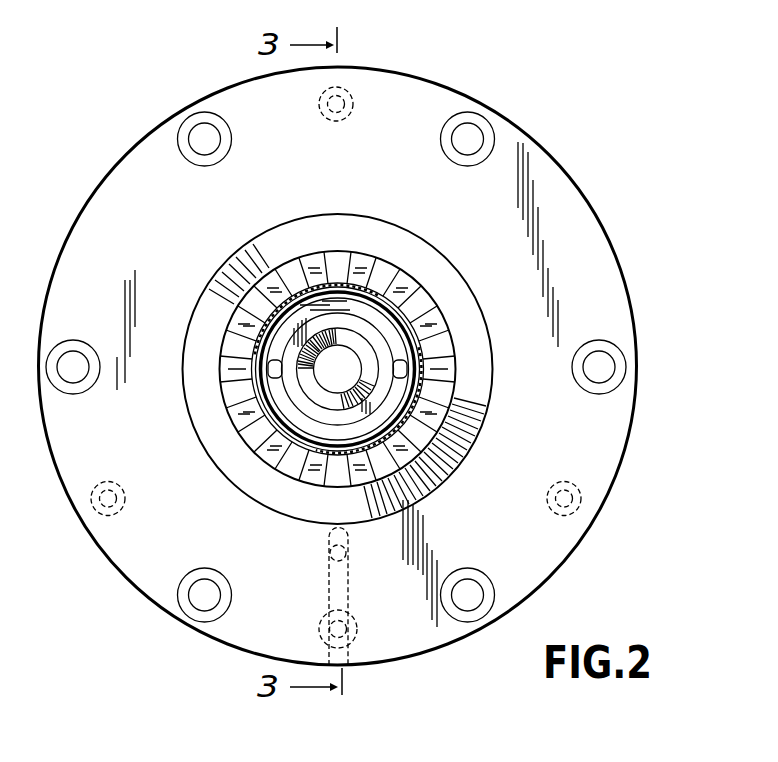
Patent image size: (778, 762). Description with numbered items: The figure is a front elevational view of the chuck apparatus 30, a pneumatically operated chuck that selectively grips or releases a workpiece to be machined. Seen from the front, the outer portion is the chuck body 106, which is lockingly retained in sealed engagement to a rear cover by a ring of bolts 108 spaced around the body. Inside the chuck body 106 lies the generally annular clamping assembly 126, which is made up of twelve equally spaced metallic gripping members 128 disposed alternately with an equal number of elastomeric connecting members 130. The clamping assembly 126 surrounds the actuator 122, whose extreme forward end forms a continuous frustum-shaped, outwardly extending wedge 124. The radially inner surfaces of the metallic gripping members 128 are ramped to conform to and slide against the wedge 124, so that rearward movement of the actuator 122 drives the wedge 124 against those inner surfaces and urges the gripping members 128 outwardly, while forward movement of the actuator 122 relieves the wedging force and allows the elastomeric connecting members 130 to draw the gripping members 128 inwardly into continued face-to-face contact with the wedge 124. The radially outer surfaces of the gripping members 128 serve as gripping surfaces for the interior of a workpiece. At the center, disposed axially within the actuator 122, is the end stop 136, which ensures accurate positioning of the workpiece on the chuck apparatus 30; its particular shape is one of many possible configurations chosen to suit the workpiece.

The chuck apparatus 30 is at (108, 130).
The chuck body 106 is at (566, 171).
The bolts 108 is at (352, 92).
The actuator 122 is at (286, 455).
The wedge 124 is at (270, 412).
The clamping assembly 126 is at (377, 251).
The metallic gripping members 128 is at (285, 282).
The elastomeric connecting members 130 is at (310, 254).
The end stop 136 is at (382, 389).